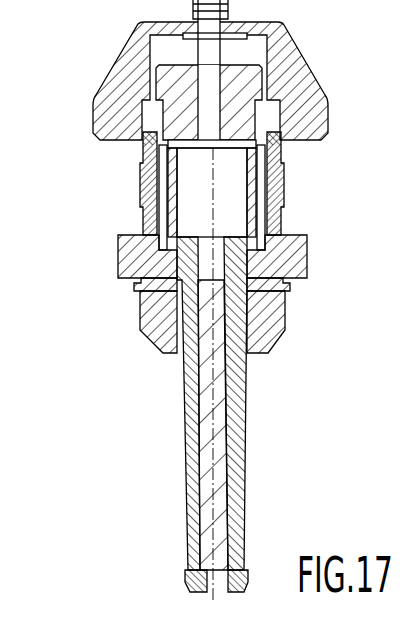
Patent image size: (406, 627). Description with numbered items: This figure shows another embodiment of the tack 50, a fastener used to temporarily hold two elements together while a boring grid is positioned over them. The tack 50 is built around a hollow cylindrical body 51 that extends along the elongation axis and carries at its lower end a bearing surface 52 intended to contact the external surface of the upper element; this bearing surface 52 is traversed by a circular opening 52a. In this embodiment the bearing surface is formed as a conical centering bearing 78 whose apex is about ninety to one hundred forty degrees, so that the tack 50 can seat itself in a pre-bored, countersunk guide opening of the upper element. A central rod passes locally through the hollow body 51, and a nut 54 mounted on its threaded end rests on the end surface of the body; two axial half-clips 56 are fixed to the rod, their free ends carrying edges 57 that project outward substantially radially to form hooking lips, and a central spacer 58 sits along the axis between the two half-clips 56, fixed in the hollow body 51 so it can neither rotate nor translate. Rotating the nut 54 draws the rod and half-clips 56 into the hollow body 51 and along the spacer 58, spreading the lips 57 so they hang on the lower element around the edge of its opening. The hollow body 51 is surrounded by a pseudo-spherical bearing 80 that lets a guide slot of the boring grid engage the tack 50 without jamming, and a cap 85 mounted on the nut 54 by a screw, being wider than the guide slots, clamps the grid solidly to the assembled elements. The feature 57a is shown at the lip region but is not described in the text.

The tack 50 is at (90, 76).
The cap 85 is at (300, 93).
The nut 54 is at (262, 184).
The hollow cylindrical body 51 is at (298, 253).
The pseudo-spherical bearing 80 is at (307, 263).
The bearing surface 52 is at (170, 350).
The circular opening 52a is at (262, 306).
The conical centering bearing 78 is at (266, 328).
The axial half-clips 56 is at (245, 470).
The central spacer 58 is at (208, 447).
The edges (hooking lips) 57 is at (190, 583).
The tip flange 57a is at (246, 568).